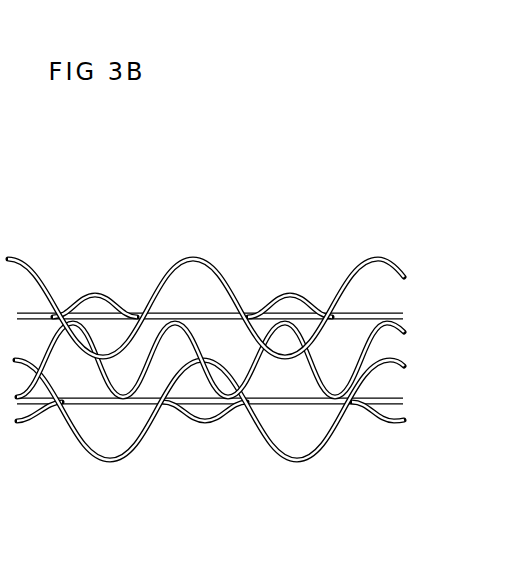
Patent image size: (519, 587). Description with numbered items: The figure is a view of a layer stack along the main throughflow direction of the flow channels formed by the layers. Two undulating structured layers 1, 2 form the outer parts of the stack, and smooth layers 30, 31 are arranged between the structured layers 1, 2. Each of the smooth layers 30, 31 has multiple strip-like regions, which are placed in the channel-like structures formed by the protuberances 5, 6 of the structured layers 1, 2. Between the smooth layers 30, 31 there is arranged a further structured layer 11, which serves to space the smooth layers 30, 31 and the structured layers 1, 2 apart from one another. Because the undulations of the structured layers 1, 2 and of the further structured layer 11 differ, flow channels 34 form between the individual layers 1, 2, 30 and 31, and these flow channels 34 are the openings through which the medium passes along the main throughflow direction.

The structured layer 1 is at (193, 258).
The structured layer 2 is at (113, 461).
The protuberance 5 is at (287, 296).
The protuberance 6 is at (205, 424).
The further structured layer 11 is at (373, 341).
The smooth layer 30 is at (373, 312).
The smooth layer 31 is at (380, 398).
The flow channel 34 is at (128, 370).